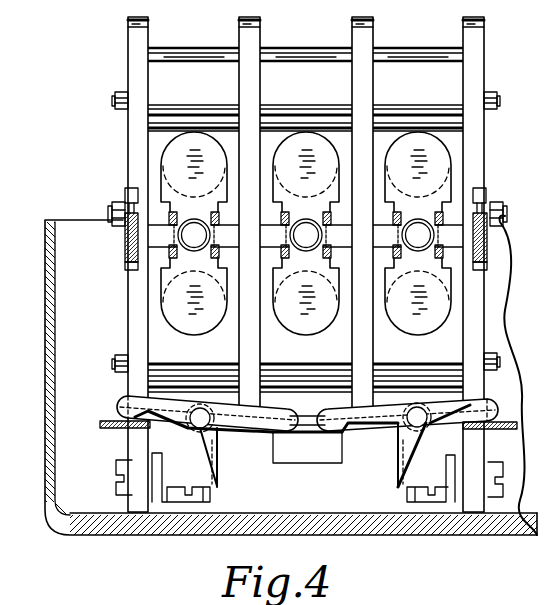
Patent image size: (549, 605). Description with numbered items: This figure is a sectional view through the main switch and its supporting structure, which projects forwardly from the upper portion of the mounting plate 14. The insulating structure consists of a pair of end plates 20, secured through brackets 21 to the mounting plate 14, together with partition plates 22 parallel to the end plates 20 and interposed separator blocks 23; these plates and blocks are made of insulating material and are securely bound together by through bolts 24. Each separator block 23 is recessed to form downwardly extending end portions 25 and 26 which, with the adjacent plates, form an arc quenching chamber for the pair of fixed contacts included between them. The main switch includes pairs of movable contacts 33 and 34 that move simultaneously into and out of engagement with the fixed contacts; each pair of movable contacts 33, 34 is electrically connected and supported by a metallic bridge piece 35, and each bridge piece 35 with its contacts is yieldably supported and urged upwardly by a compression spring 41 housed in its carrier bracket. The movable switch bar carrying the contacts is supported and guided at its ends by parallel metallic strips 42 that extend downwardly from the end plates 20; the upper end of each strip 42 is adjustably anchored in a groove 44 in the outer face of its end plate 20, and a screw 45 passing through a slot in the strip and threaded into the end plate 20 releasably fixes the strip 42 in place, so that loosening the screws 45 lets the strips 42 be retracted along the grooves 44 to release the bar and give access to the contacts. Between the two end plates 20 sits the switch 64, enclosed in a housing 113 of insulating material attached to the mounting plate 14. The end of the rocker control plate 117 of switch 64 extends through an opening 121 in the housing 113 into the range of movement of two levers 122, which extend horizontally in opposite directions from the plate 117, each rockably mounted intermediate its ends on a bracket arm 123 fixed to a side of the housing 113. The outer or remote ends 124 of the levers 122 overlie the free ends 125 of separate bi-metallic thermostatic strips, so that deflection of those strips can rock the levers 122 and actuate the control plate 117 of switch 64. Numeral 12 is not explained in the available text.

The operating bar 12 is at (498, 408).
The mounting plate 14 is at (412, 519).
The end plates 20 is at (128, 46).
The brackets 21 is at (152, 460).
The partition plates 22 is at (262, 38).
The separator blocks 23 is at (158, 137).
The through bolts 24 is at (115, 106).
The downwardly extending end portion 25 is at (195, 62).
The downwardly extending end portion 26 is at (162, 362).
The movable contacts 33 is at (168, 169).
The movable contacts 34 is at (178, 298).
The bridge piece 35 is at (188, 256).
The compression spring 41 is at (190, 218).
The metallic strips 42 is at (125, 241).
The groove 44 is at (125, 193).
The screw 45 is at (110, 213).
The switch 64 is at (230, 476).
The housing 113 is at (367, 500).
The rocker control plate 117 is at (295, 445).
The opening 121 is at (323, 460).
The levers 122 is at (258, 420).
The bracket arm 123 is at (203, 442).
The outer ends 124 is at (126, 404).
The free ends 125 is at (106, 431).